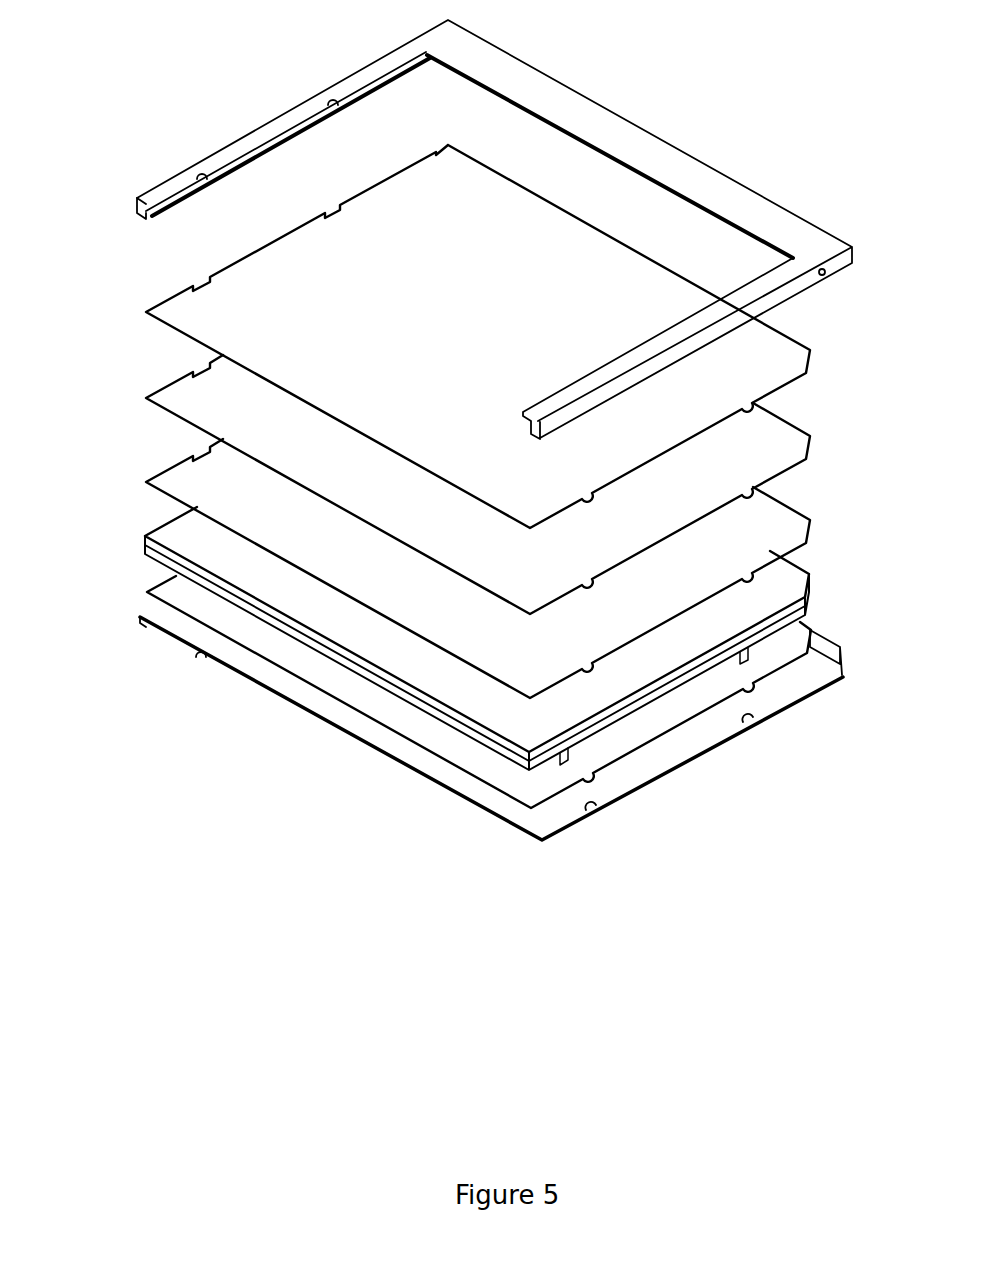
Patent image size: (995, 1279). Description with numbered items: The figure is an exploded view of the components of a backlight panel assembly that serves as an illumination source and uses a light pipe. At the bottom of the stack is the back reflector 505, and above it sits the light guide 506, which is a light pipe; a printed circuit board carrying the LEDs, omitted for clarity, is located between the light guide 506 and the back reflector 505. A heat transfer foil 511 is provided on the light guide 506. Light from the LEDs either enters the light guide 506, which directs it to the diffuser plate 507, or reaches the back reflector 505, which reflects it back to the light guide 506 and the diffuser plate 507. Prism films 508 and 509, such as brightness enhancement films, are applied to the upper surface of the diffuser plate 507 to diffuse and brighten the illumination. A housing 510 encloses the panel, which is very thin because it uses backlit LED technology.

The back reflector 505 is at (165, 592).
The light guide 506 is at (157, 543).
The diffuser plate 507 is at (168, 482).
The prism film 508 is at (177, 397).
The prism film 509 is at (180, 311).
The housing 510 is at (137, 208).
The heat transfer foil 511 is at (520, 742).